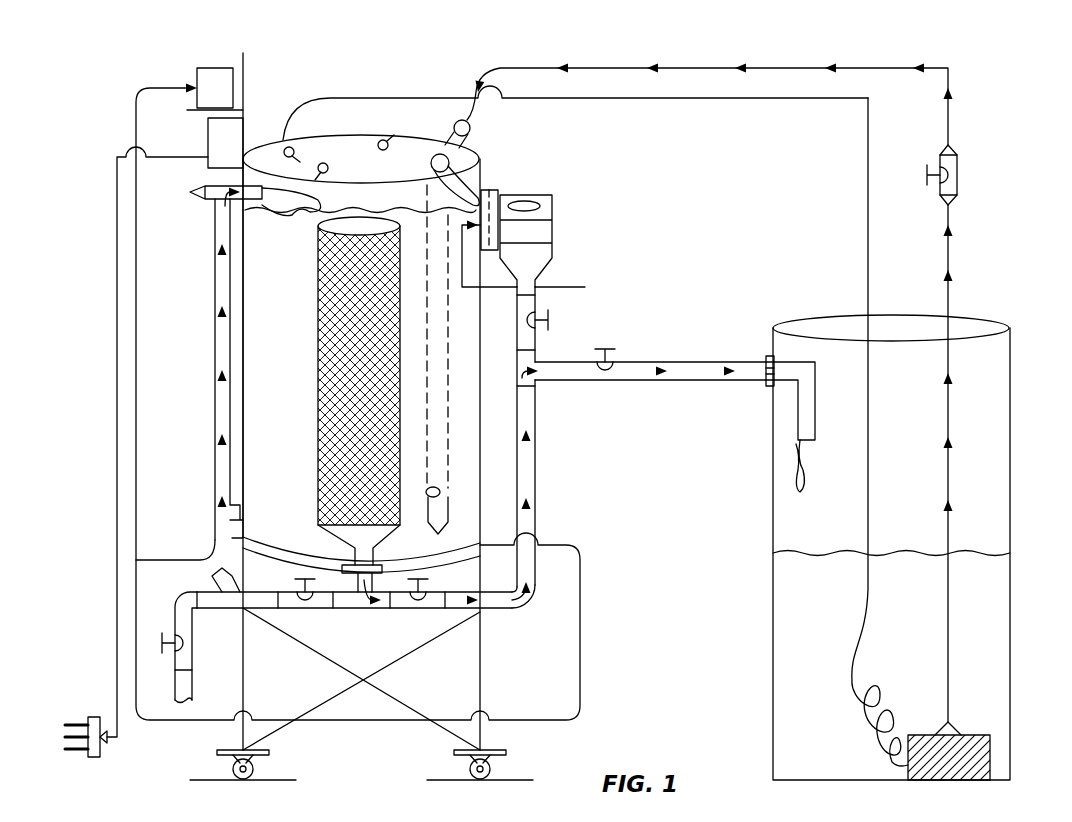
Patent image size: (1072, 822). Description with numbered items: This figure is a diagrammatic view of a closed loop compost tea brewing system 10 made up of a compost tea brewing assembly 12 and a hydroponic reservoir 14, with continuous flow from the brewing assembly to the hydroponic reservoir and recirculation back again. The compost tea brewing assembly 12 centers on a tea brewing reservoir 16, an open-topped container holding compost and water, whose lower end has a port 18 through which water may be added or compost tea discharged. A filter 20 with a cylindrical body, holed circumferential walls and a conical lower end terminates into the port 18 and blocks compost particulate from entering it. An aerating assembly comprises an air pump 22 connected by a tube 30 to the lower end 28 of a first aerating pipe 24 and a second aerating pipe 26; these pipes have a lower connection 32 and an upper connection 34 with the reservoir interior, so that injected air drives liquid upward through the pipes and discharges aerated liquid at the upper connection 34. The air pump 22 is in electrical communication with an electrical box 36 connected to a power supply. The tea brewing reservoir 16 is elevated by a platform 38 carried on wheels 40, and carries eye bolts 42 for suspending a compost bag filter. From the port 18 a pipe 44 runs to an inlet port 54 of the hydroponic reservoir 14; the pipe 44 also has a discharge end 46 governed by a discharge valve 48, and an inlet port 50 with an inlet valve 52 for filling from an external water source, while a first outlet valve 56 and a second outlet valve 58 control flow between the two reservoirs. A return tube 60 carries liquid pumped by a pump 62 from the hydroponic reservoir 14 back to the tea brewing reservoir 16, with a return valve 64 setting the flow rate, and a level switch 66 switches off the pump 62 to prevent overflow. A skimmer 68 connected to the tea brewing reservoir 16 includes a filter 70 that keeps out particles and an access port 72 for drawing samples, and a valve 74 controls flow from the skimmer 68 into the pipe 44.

The closed loop compost tea brewing system 10 is at (968, 35).
The compost tea brewing assembly 12 is at (572, 152).
The hydroponic reservoir 14 is at (1010, 425).
The tea brewing reservoir 16 is at (483, 392).
The port 18 is at (345, 548).
The filter 20 is at (318, 280).
The air pump 22 is at (205, 101).
The first aerating pipe 24 is at (214, 285).
The second aerating pipe 26 is at (445, 338).
The lower end 28 is at (212, 538).
The tube 30 is at (136, 447).
The lower connection 32 is at (436, 487).
The upper connection 34 is at (425, 160).
The electrical box 36 is at (215, 156).
The platform 38 is at (483, 660).
The wheels 40 is at (255, 768).
The eye bolts 42 is at (380, 148).
The pipe 44 is at (360, 610).
The discharge end 46 is at (190, 685).
The discharge valve 48 is at (192, 645).
The inlet port 50 is at (213, 578).
The inlet valve 52 is at (305, 610).
The inlet port 54 is at (764, 360).
The first outlet valve 56 is at (422, 580).
The second outlet valve 58 is at (610, 360).
The return tube 60 is at (950, 288).
The pump 62 is at (968, 735).
The return valve 64 is at (958, 175).
The level switch 66 is at (287, 148).
The skimmer 68 is at (553, 240).
The filter 70 is at (497, 197).
The access port 72 is at (528, 203).
The valve 74 is at (540, 312).